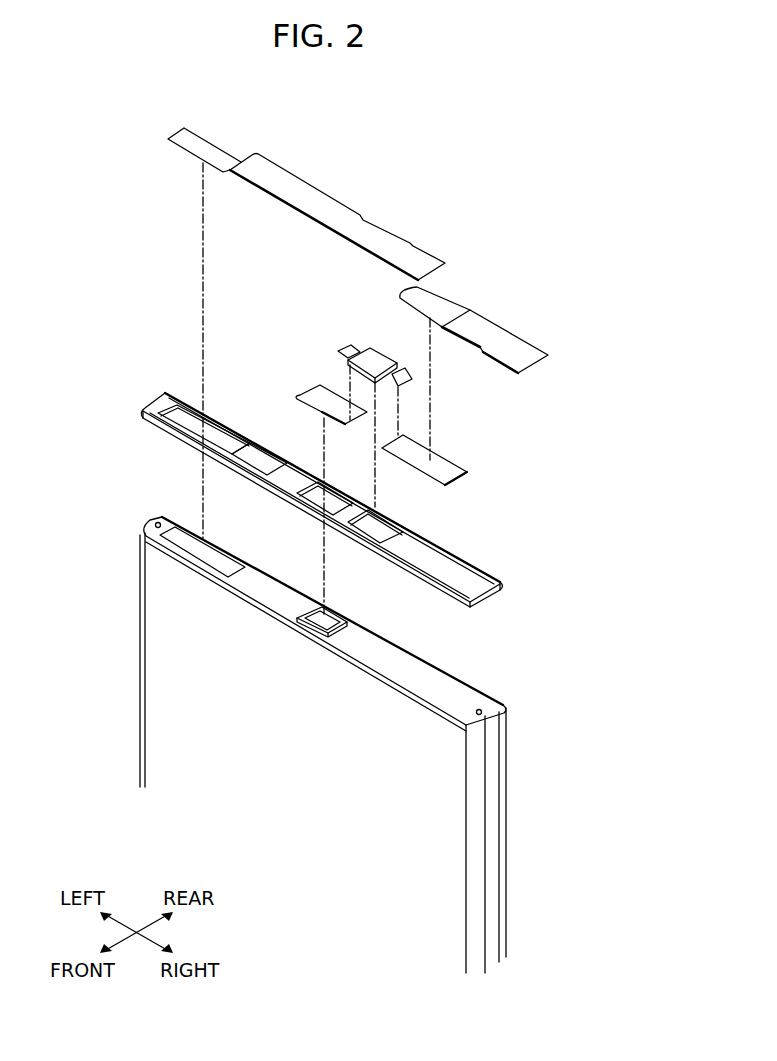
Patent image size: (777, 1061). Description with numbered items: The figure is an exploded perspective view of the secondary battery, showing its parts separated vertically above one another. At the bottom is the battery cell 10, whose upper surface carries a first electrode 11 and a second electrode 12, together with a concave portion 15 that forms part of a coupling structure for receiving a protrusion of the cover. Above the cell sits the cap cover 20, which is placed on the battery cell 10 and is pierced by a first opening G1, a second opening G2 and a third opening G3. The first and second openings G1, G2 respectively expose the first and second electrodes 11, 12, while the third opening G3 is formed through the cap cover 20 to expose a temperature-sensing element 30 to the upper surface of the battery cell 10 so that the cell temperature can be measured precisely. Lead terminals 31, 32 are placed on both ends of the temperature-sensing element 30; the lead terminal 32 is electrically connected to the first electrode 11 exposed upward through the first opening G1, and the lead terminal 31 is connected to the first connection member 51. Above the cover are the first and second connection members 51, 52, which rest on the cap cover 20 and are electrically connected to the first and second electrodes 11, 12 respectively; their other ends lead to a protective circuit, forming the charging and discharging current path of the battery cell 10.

The battery cell 10 is at (498, 833).
The first electrode 11 is at (328, 617).
The second electrode 12 is at (202, 552).
The concave portion 15 is at (483, 710).
The cap cover 20 is at (337, 494).
The first opening G1 is at (327, 503).
The second opening G2 is at (212, 432).
The third opening G3 is at (375, 532).
The temperature-sensing element 30 is at (381, 360).
The lead terminal 31 is at (447, 463).
The lead terminal 32 is at (310, 390).
The first connection member 51 is at (508, 333).
The second connection member 52 is at (307, 188).